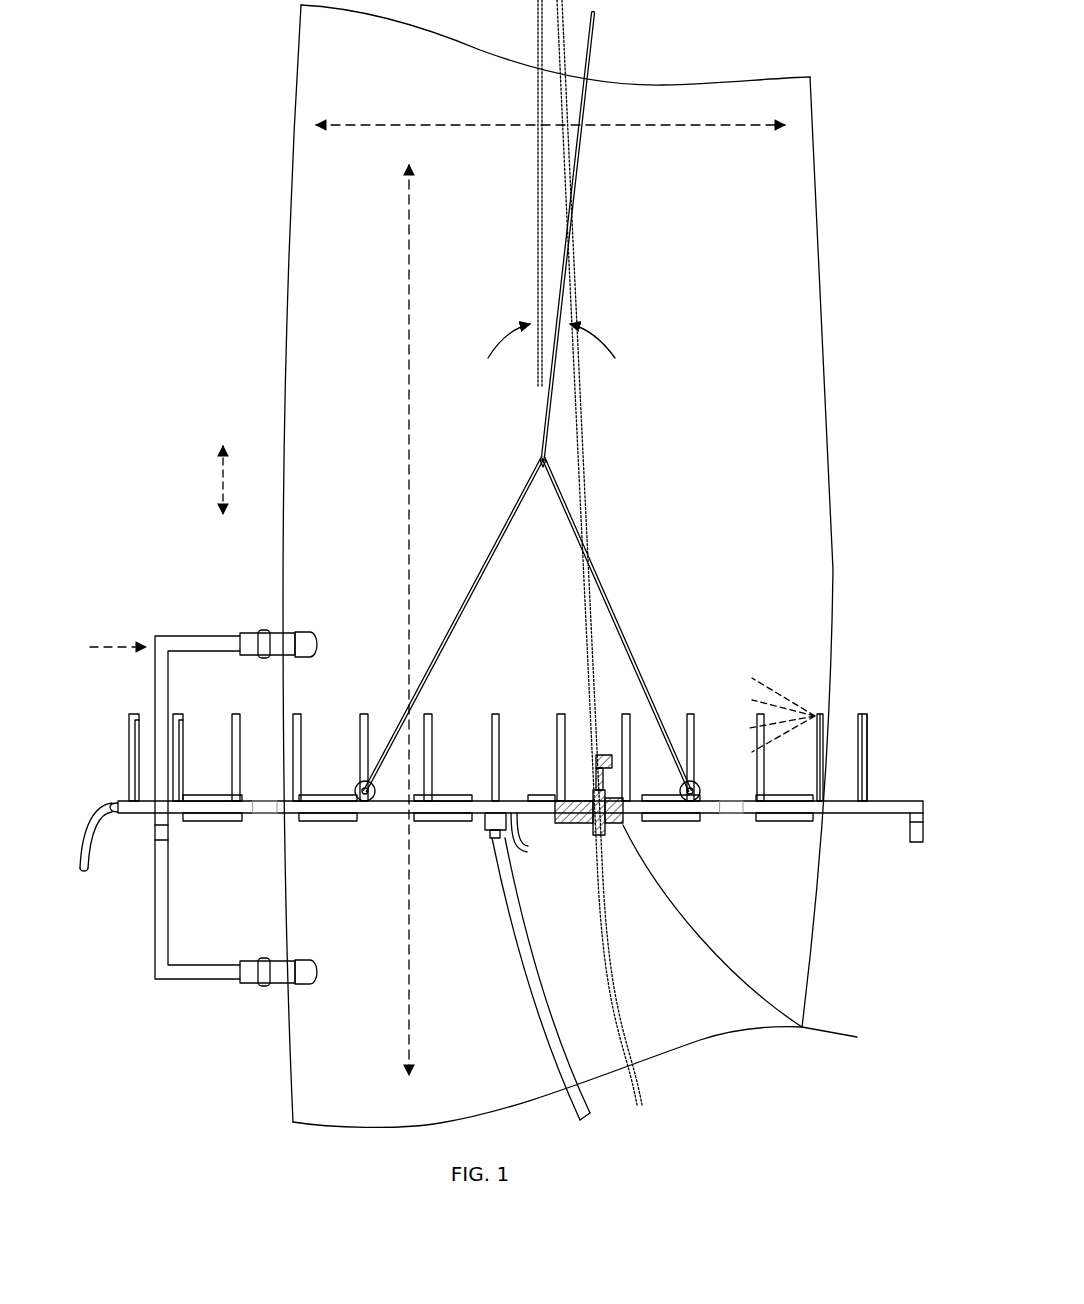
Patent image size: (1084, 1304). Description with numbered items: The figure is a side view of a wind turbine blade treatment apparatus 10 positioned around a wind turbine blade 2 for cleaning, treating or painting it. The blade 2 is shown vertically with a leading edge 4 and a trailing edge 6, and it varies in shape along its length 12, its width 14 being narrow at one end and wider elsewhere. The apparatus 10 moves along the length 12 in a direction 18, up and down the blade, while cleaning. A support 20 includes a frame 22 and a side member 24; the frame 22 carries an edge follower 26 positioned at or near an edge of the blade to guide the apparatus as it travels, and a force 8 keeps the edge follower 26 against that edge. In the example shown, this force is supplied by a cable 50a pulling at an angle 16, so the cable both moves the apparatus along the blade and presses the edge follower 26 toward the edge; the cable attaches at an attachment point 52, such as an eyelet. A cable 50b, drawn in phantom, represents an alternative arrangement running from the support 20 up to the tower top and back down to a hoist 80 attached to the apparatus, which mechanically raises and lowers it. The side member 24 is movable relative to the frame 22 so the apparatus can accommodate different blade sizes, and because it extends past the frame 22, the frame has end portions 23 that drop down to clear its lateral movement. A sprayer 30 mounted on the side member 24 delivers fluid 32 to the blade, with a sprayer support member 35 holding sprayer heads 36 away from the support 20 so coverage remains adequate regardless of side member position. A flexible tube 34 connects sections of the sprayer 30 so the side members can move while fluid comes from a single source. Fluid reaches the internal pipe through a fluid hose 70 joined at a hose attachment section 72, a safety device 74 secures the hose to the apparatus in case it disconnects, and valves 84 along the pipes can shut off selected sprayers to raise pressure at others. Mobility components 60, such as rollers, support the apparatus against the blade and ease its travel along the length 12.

The wind turbine blade 2 is at (768, 223).
The leading edge 4 is at (287, 297).
The trailing edge 6 is at (833, 528).
The force 8 is at (110, 645).
The wind turbine blade treatment apparatus 10 is at (162, 405).
The length 12 is at (409, 375).
The width 14 is at (480, 127).
The angle 16 is at (520, 328).
The direction 18 is at (223, 493).
The support 20 is at (222, 595).
The frame 22 is at (855, 814).
The end portions 23 is at (164, 838).
The side member 24 is at (133, 817).
The edge follower 26 is at (250, 983).
The sprayer 30 is at (556, 703).
The fluid 32 is at (777, 688).
The flexible tube 34 is at (107, 802).
The sprayer support member 35 is at (868, 772).
The sprayer head 36 is at (858, 716).
The cable 50a is at (582, 145).
The cable 50b is at (563, 100).
The attachment point 52 is at (699, 785).
The mobility component 60 is at (323, 636).
The fluid hose 70 is at (528, 967).
The hose attachment section 72 is at (485, 826).
The safety device 74 is at (527, 850).
The hoist 80 is at (755, 938).
The valve 84 is at (735, 815).